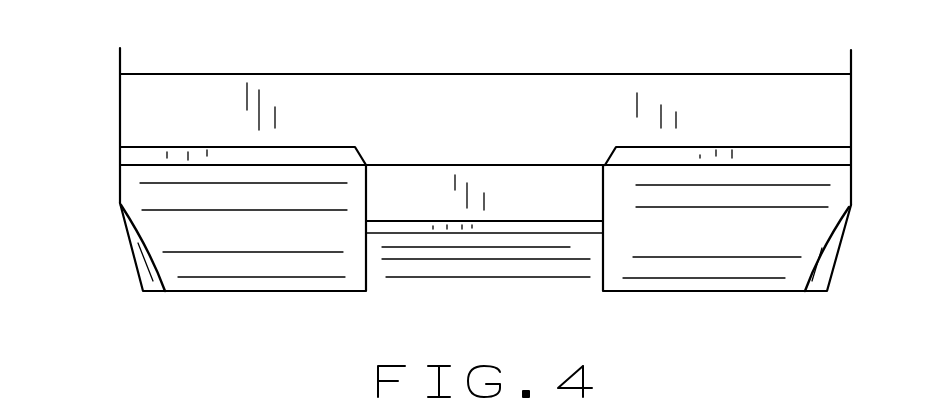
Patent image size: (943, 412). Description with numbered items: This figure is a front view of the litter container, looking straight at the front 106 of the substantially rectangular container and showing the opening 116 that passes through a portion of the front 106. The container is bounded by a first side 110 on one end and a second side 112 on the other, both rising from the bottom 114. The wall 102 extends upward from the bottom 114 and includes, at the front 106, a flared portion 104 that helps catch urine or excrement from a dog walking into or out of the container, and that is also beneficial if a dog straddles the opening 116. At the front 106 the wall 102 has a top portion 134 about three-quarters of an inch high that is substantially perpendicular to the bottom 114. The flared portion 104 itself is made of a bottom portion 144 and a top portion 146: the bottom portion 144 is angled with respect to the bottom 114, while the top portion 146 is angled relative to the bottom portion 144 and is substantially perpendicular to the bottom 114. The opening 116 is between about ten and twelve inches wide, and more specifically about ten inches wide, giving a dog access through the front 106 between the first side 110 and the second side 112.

The first side 110 is at (120, 122).
The second side 112 is at (851, 117).
The wall 102 is at (147, 173).
The top portion 134 is at (727, 155).
The front 106 is at (328, 228).
The bottom 114 is at (730, 292).
The flared portion 104 is at (516, 268).
The bottom portion 144 is at (432, 272).
The top portion 146 is at (420, 227).
The opening 116 is at (563, 194).